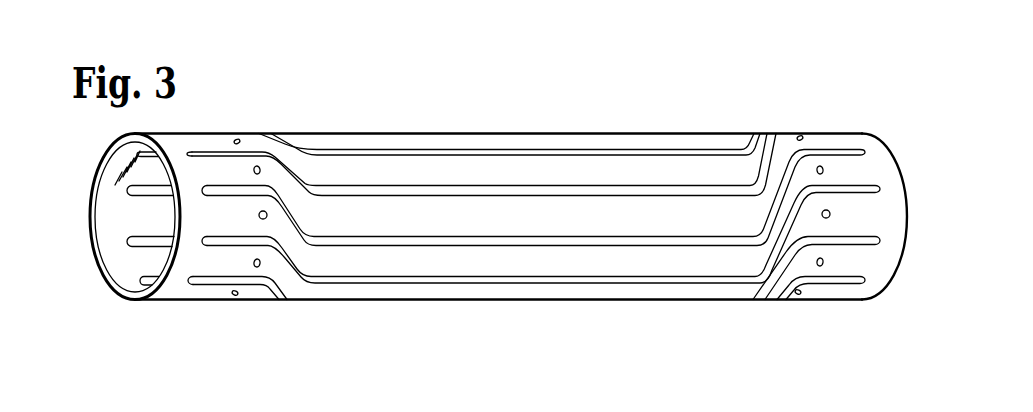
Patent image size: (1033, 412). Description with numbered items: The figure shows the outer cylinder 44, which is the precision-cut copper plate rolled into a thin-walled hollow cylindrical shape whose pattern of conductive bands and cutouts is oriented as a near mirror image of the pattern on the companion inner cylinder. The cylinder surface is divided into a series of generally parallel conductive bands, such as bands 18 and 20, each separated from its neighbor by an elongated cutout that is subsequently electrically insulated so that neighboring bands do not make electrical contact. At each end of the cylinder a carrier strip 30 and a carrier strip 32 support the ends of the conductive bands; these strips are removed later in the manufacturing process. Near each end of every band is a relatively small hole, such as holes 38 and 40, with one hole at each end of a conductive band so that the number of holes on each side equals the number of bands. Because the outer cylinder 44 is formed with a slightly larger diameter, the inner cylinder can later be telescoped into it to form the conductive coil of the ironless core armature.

The conductive band 18 is at (503, 263).
The conductive band 20 is at (383, 217).
The carrier strip 30 is at (170, 289).
The carrier strip 32 is at (872, 283).
The hole 38 is at (824, 210).
The hole 40 is at (266, 212).
The outer cylinder 44 is at (623, 81).